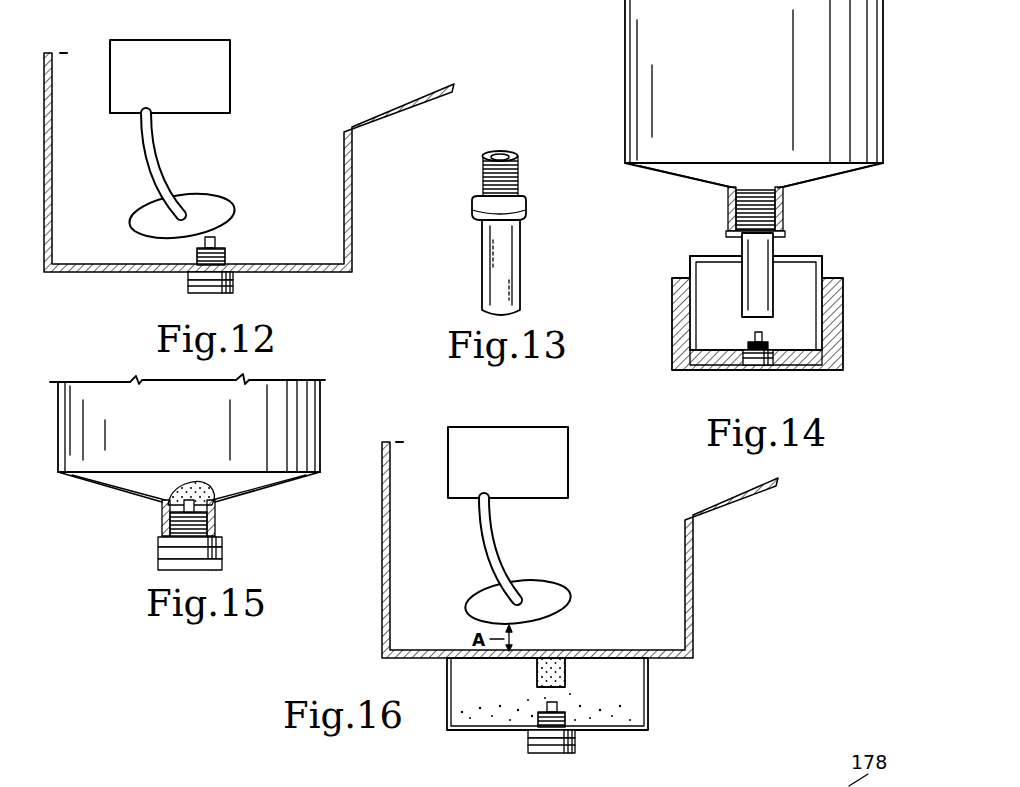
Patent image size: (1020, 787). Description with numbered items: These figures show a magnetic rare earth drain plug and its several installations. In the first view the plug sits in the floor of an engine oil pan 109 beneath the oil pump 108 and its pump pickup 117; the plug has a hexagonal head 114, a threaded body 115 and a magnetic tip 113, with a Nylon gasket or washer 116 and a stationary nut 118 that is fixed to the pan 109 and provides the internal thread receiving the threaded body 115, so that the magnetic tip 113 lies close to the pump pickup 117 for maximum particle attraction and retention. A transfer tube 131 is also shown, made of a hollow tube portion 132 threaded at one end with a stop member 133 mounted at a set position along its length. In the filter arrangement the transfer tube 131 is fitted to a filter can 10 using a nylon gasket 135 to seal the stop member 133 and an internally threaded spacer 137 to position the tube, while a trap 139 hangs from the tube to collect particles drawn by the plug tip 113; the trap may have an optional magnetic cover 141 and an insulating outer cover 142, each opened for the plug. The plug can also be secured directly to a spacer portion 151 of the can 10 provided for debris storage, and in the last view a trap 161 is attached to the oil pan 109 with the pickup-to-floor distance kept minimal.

In FIG. 14, the filter can 10 is at (710, 53).
In FIG. 15, the filter can 10 is at (180, 425).
In FIG. 12, the oil pump 108 is at (220, 43).
In FIG. 16, the oil pump 108 is at (568, 486).
In FIG. 12, the oil pan 109 is at (358, 185).
In FIG. 16, the oil pan 109 is at (696, 555).
In FIG. 12, the magnetic tip 113 is at (217, 245).
In FIG. 14, the magnetic tip 113 is at (762, 336).
In FIG. 15, the magnetic tip 113 is at (200, 509).
In FIG. 16, the magnetic tip 113 is at (558, 704).
In FIG. 12, the hexagonal head 114 is at (205, 292).
In FIG. 14, the hexagonal head 114 is at (764, 366).
In FIG. 15, the hexagonal head 114 is at (158, 561).
In FIG. 16, the hexagonal head 114 is at (532, 748).
In FIG. 12, the threaded body 115 is at (226, 258).
In FIG. 14, the threaded body 115 is at (770, 346).
In FIG. 16, the threaded body 115 is at (568, 718).
In FIG. 12, the Nylon gasket or washer 116 is at (234, 286).
In FIG. 14, the Nylon gasket or washer 116 is at (752, 364).
In FIG. 15, the Nylon gasket or washer 116 is at (223, 553).
In FIG. 16, the Nylon gasket or washer 116 is at (530, 744).
In FIG. 12, the pump pickup 117 is at (217, 192).
In FIG. 16, the pump pickup 117 is at (553, 580).
In FIG. 12, the stationary nut 118 is at (190, 276).
In FIG. 14, the stationary nut 118 is at (771, 361).
In FIG. 15, the stationary nut 118 is at (222, 546).
In FIG. 16, the stationary nut 118 is at (577, 737).
In FIG. 13, the transfer tube 131 is at (491, 233).
In FIG. 13, the hollow tube portion 132 is at (483, 281).
In FIG. 14, the hollow tube portion 132 is at (749, 280).
In FIG. 13, the stop member 133 is at (524, 201).
In FIG. 14, the stop member 133 is at (786, 232).
In FIG. 14, the nylon gasket 135 is at (728, 208).
In FIG. 14, the internally threaded spacer 137 is at (781, 205).
In FIG. 14, the trap 139 is at (824, 269).
In FIG. 14, the magnetic cover 141 is at (672, 300).
In FIG. 14, the insulating outer cover 142 is at (683, 327).
In FIG. 15, the spacer portion 151 is at (162, 512).
In FIG. 16, the trap 161 is at (648, 688).